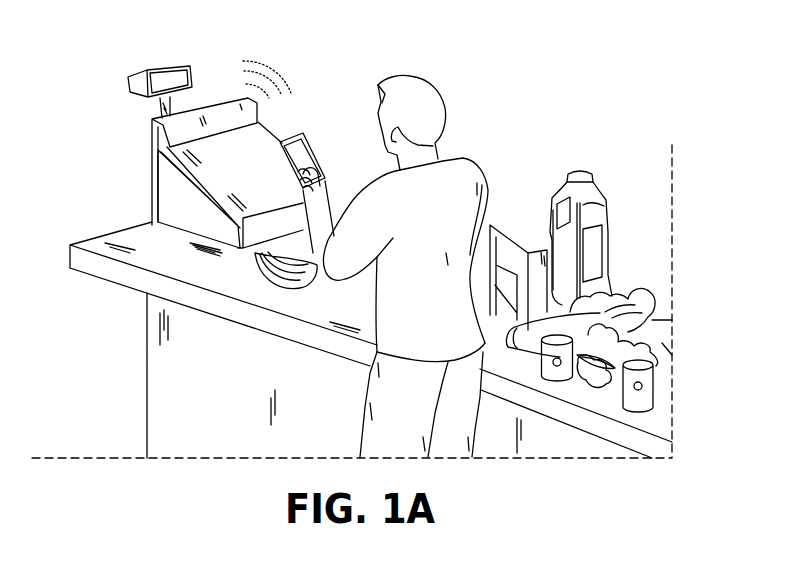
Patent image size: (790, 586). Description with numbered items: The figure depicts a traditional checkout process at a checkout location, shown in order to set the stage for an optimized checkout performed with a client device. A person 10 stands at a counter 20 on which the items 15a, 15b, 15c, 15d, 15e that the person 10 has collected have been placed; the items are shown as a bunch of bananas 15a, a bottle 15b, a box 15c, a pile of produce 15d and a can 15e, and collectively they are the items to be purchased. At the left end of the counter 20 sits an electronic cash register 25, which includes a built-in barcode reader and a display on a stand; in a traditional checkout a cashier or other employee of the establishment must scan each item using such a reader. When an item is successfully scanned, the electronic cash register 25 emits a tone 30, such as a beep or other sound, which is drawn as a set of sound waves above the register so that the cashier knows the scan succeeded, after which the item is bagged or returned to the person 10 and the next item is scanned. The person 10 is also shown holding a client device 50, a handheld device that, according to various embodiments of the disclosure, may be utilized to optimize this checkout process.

The person 10 is at (465, 160).
The item 15a is at (280, 293).
The item 15b is at (582, 170).
The item 15c is at (517, 231).
The item 15d is at (652, 308).
The item 15e is at (655, 387).
The counter 20 is at (213, 315).
The electronic cash register 25 is at (150, 175).
The tone 30 is at (282, 66).
The client device 50 is at (293, 168).